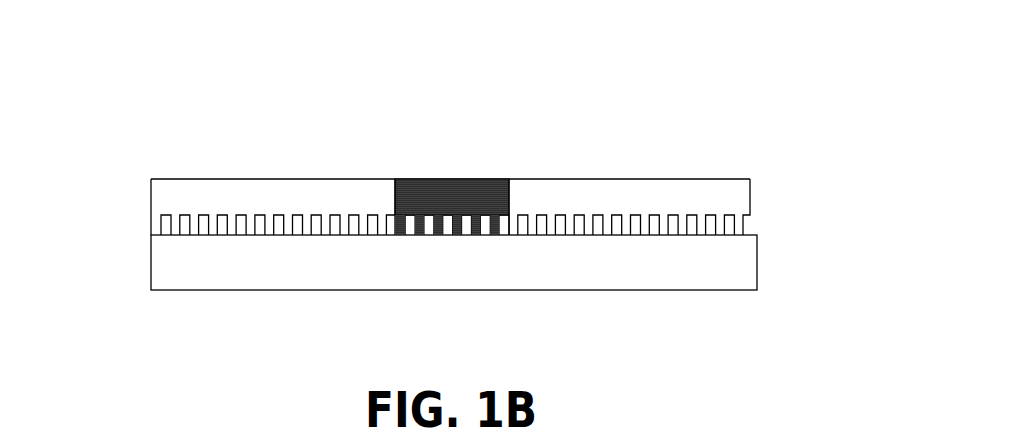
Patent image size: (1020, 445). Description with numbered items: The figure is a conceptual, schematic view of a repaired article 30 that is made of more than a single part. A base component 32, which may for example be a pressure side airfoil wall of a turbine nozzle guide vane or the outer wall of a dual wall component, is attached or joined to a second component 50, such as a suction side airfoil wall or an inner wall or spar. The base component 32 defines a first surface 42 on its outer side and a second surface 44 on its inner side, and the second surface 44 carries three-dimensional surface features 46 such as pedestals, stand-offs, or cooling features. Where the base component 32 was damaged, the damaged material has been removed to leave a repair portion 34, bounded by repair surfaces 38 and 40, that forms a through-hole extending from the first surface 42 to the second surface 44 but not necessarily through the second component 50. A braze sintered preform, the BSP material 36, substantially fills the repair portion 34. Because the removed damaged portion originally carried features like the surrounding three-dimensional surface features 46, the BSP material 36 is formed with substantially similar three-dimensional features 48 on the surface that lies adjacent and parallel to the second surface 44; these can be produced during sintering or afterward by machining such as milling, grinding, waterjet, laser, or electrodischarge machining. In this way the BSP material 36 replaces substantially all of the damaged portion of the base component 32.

The repaired article 30 is at (150, 58).
The base component 32 is at (151, 209).
The repair portion 34 is at (424, 140).
The BSP material 36 is at (486, 190).
The repair surface 38 is at (395, 205).
The repair surface 40 is at (507, 212).
The first surface 42 is at (638, 179).
The second surface 44 is at (745, 219).
The three-dimensional surface features 46 is at (660, 224).
The three-dimensional features 48 is at (497, 235).
The second component 50 is at (151, 261).